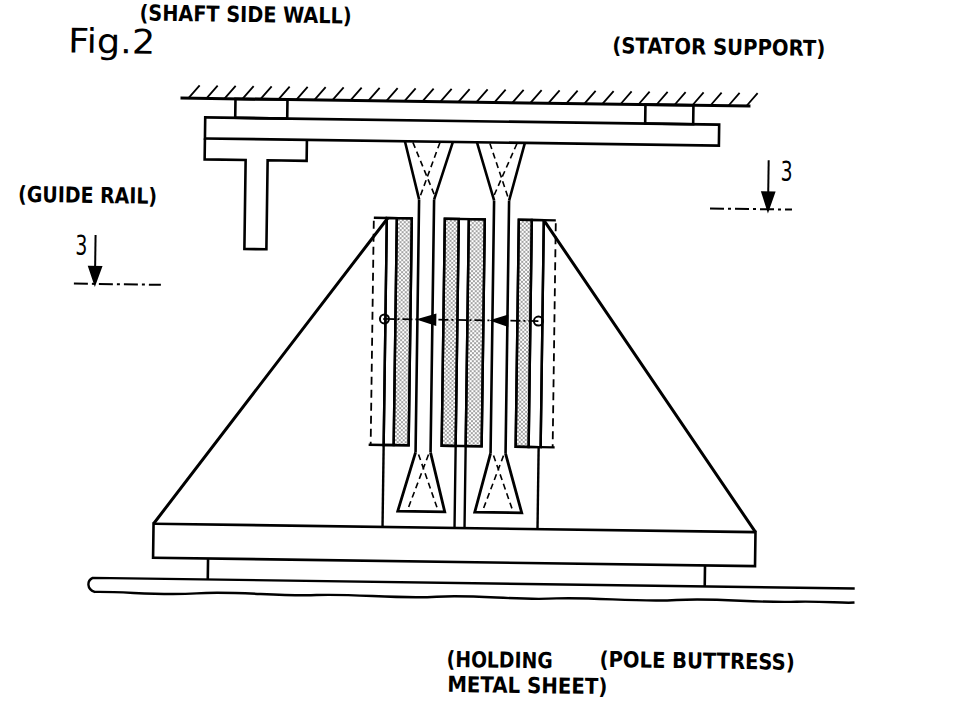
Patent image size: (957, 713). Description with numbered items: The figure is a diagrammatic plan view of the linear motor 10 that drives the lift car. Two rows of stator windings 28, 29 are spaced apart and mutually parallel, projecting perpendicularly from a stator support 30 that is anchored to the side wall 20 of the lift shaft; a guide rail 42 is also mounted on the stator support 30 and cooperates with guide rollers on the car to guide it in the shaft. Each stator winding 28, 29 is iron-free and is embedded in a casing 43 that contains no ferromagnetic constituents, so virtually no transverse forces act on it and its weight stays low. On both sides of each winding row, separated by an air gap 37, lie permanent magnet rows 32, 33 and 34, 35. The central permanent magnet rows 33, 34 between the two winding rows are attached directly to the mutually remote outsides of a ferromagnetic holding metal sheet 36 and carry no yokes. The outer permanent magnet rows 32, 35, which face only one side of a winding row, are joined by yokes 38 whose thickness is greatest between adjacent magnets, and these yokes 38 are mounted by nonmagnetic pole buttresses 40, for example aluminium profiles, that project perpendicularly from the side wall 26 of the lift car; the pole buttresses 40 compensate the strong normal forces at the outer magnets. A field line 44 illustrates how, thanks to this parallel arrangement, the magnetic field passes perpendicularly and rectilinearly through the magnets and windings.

The linear motor 10 is at (748, 383).
The side wall 20 is at (326, 102).
The side wall 26 is at (121, 591).
The stator winding 28 is at (479, 146).
The stator winding 29 is at (407, 146).
The stator support 30 is at (576, 132).
The permanent magnet row 32 is at (525, 247).
The permanent magnet row 33 is at (474, 284).
The permanent magnet row 34 is at (448, 273).
The permanent magnet row 35 is at (402, 344).
The holding metal sheet 36 is at (460, 530).
The air gap 37 is at (428, 451).
The yoke 38 is at (387, 384).
The pole buttress 40 is at (300, 517).
The guide rail 42 is at (231, 155).
The casing 43 is at (415, 205).
The field line 44 is at (516, 320).